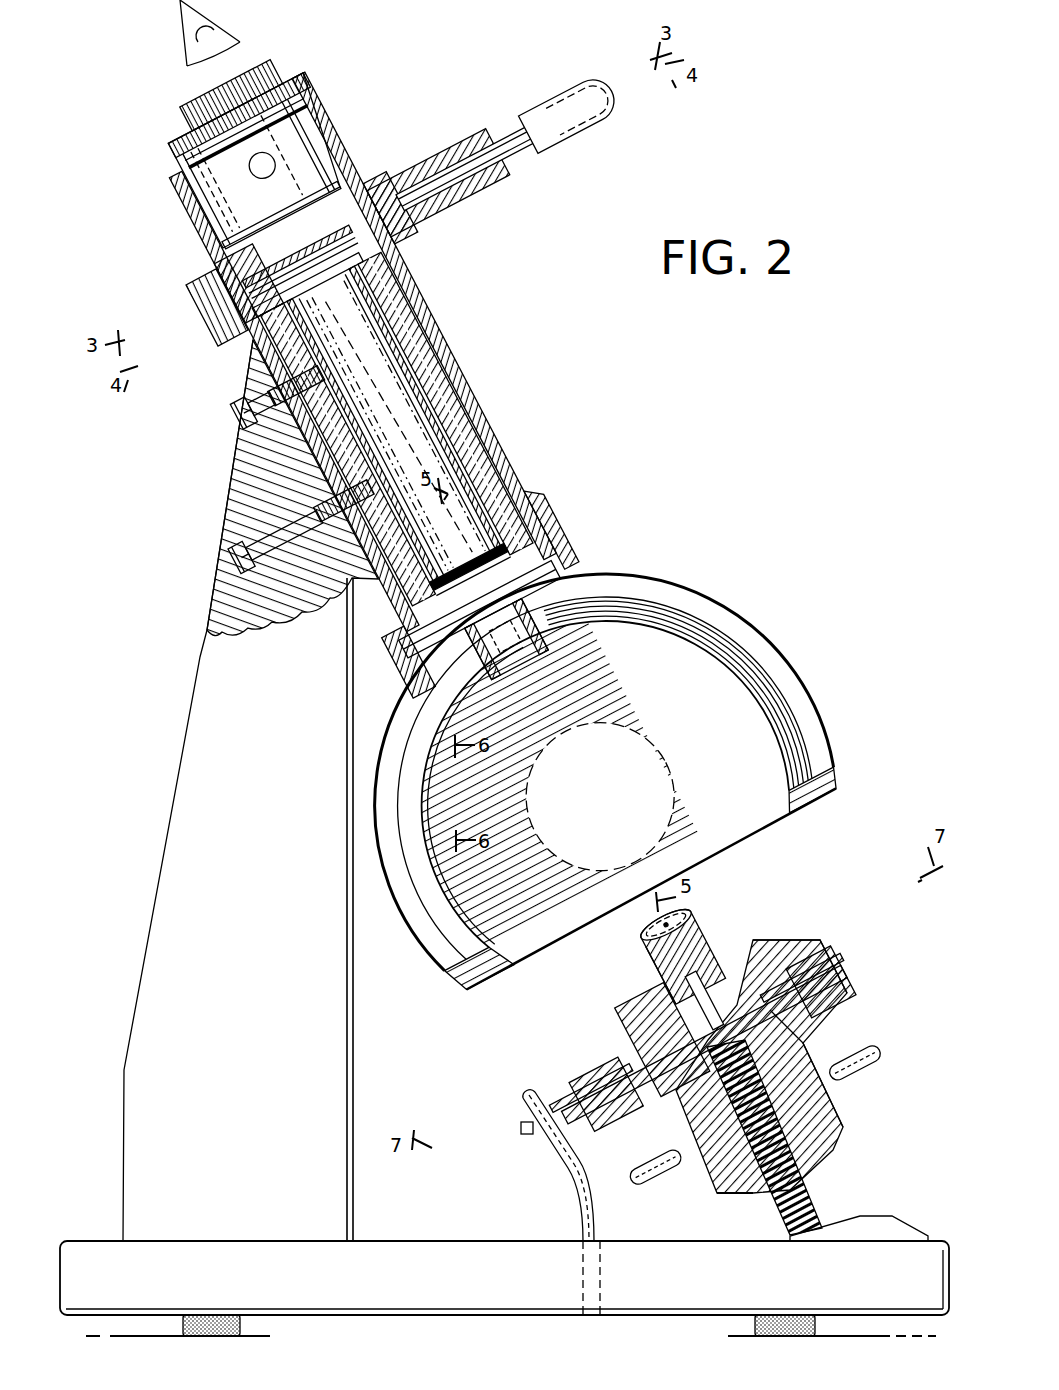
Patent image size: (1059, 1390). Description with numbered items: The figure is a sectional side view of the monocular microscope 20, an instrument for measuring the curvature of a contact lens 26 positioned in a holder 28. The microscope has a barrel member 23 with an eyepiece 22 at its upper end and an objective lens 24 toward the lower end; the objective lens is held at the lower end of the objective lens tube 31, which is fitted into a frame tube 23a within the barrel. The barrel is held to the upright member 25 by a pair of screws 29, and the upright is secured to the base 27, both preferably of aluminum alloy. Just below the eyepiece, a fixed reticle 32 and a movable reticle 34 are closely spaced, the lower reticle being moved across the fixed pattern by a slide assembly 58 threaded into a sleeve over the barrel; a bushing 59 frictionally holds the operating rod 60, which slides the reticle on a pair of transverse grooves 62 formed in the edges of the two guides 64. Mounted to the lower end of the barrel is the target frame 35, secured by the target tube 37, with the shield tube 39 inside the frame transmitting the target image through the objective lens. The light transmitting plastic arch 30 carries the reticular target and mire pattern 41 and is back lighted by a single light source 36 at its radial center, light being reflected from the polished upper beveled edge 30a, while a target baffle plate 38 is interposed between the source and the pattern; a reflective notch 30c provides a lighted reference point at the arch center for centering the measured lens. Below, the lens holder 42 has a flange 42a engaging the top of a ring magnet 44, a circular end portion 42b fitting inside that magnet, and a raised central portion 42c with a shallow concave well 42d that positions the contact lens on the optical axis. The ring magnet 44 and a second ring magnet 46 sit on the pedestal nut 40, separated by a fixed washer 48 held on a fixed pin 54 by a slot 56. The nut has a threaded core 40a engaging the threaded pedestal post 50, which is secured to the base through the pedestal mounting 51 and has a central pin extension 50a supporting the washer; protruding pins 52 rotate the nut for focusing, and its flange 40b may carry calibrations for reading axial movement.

The monocular microscope 20 is at (782, 428).
The eyepiece 22 is at (183, 110).
The barrel member 23 is at (480, 386).
The frame tube 23a is at (428, 326).
The objective lens 24 is at (490, 556).
The upright member 25 is at (200, 805).
The contact lens 26 is at (630, 945).
The base 27 is at (414, 1242).
The holder 28 is at (830, 898).
The screws 29 is at (242, 420).
The light transmitting plastic arch 30 is at (417, 882).
The upper beveled edge 30a is at (758, 710).
The reflective notch 30c is at (556, 690).
The objective lens tube 31 is at (392, 412).
The fixed reticle 32 is at (328, 258).
The movable reticle 34 is at (368, 226).
The target frame 35 is at (405, 680).
The light source 36 is at (585, 722).
The target tube 37 is at (572, 516).
The target baffle plate 38 is at (497, 970).
The shield tube 39 is at (560, 648).
The pedestal nut 40 is at (825, 1106).
The core 40a is at (762, 1194).
The flange 40b is at (830, 1023).
The reticular target and mire pattern 41 is at (458, 904).
The lens holder 42 is at (605, 1024).
The flange 42a is at (770, 946).
The circular end portion 42b is at (812, 984).
The raised central portion 42c is at (655, 963).
The shallow concave well 42d is at (695, 940).
The ring magnet 44 is at (825, 948).
The ring magnet 46 is at (830, 990).
The fixed washer 48 is at (832, 965).
The threaded pedestal post 50 is at (815, 1195).
The central pin extension 50a is at (700, 1020).
The pedestal mounting 51 is at (868, 1214).
The protruding pins 52 is at (860, 1066).
The fixed pin 54 is at (558, 1160).
The slot 56 is at (521, 1128).
The slide assembly 58 is at (404, 153).
The bushing 59 is at (505, 177).
The operating rod 60 is at (558, 108).
The transverse grooves 62 is at (282, 296).
The guides 64 is at (346, 262).